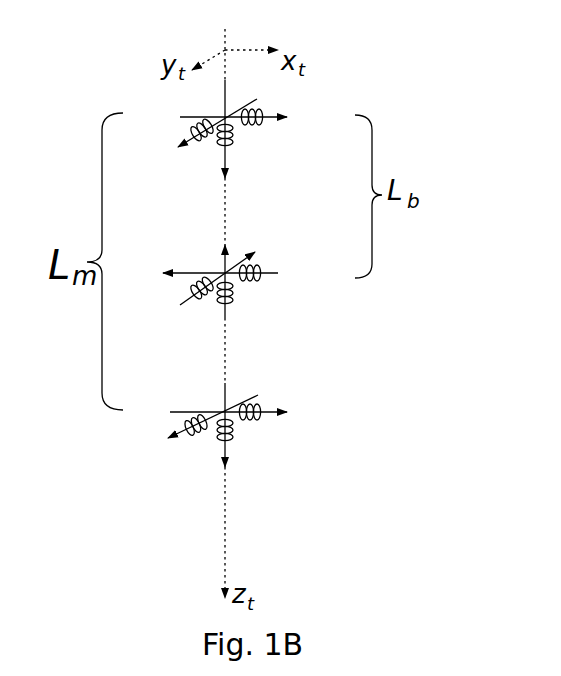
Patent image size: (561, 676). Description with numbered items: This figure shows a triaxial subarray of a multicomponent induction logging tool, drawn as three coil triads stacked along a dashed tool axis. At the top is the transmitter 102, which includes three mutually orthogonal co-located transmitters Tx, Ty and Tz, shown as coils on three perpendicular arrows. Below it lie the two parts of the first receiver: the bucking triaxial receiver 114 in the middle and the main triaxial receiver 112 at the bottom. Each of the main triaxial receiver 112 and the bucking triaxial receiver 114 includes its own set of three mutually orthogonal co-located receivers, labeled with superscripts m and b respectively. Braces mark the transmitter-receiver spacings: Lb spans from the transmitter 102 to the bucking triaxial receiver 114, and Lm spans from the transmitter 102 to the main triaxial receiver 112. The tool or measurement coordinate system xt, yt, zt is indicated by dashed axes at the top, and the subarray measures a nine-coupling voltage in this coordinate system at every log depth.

The transmitter 102 is at (282, 117).
The bucking triaxial receiver 114 is at (252, 297).
The main triaxial receiver 112 is at (268, 482).